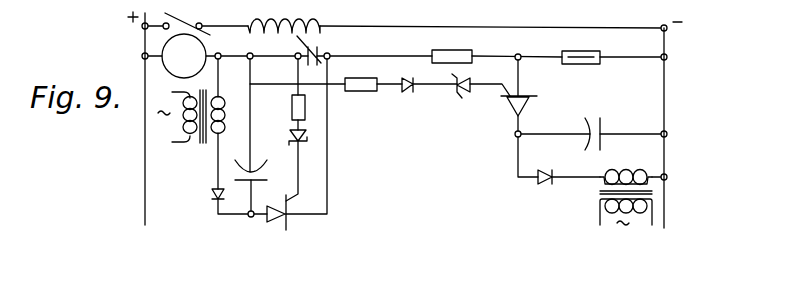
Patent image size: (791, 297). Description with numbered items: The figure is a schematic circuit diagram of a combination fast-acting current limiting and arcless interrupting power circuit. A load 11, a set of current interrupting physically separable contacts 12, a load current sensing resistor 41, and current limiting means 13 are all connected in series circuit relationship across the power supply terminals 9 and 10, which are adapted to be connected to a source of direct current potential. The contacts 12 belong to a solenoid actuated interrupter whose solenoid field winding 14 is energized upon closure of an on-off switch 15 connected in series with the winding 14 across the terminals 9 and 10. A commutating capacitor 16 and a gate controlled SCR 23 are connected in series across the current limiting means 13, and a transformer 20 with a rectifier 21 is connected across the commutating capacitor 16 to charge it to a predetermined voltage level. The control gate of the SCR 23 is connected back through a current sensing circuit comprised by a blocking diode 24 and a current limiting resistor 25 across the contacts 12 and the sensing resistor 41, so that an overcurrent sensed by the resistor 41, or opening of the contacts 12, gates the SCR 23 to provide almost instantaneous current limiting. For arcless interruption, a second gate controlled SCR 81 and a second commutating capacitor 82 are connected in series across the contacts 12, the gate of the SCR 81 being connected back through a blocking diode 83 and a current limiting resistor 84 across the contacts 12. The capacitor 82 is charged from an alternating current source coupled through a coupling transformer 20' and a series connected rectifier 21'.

The power supply terminal 9 is at (145, 40).
The power supply terminal 10 is at (666, 52).
The load 11 is at (171, 67).
The set of current interrupting physically separable contacts 12 is at (322, 50).
The current limiting means 13 is at (579, 52).
The solenoid field winding 14 is at (265, 36).
The on-off switch 15 is at (198, 30).
The commutating capacitor 16 is at (605, 130).
The transformer 20 is at (609, 198).
The coupling transformer 20' is at (191, 132).
The rectifier 21 is at (537, 193).
The rectifier 21' is at (198, 199).
The gate controlled SCR 23 is at (530, 110).
The blocking diode 24 is at (413, 93).
The current limiting resistor 25 is at (368, 79).
The load current sensing resistor 41 is at (453, 60).
The second gate controlled SCR 81 is at (278, 224).
The second commutating capacitor 82 is at (257, 163).
The blocking diode 83 is at (301, 146).
The current limiting resistor 84 is at (292, 104).